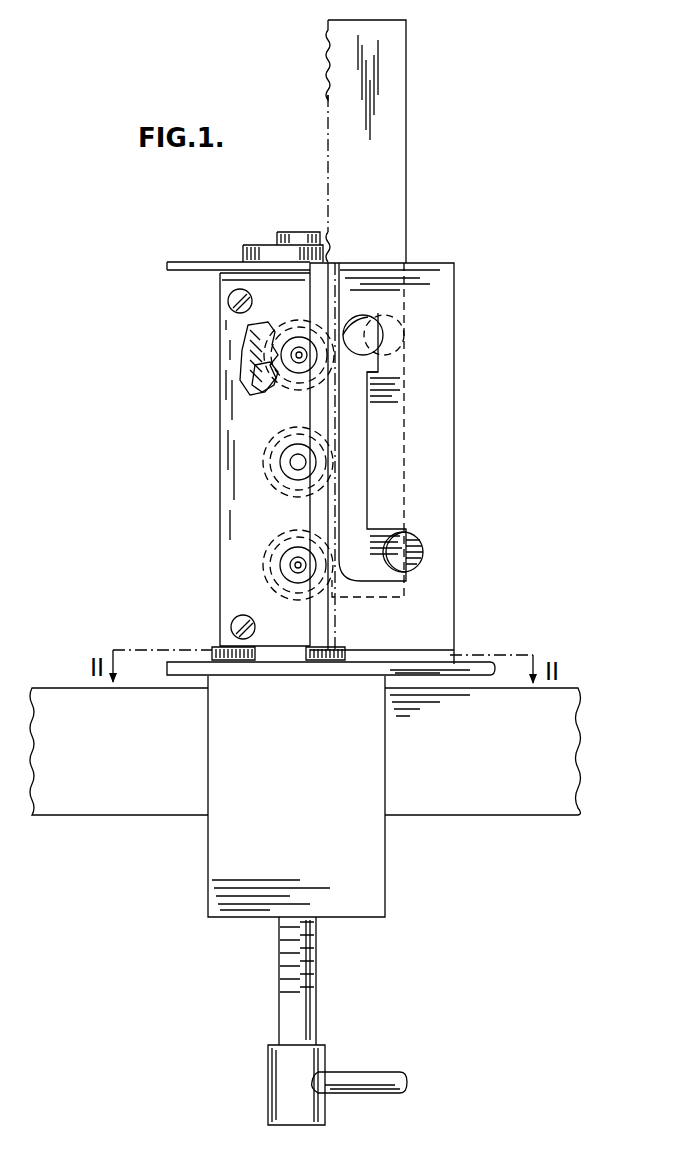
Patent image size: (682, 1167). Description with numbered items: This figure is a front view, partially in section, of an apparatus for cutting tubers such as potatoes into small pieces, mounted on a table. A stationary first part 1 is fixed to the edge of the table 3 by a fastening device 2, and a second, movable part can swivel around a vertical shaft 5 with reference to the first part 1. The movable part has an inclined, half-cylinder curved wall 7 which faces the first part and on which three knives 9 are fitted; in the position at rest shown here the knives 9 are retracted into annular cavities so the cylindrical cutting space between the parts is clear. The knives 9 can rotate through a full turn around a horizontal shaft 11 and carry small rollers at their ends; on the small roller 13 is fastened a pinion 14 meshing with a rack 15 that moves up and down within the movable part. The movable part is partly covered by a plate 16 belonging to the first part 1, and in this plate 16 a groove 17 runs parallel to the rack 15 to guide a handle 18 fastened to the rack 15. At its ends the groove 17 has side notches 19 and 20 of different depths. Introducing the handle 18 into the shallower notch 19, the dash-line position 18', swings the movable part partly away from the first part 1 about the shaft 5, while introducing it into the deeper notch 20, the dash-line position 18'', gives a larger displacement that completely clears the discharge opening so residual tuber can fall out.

The first part 1 is at (212, 263).
The fastening device 2 is at (235, 928).
The table 3 is at (562, 752).
The vertical shaft 5 is at (292, 235).
The curved wall 7 is at (240, 350).
The knives 9 is at (242, 378).
The horizontal shaft 11 is at (308, 358).
The small roller 13 is at (296, 348).
The pinion 14 is at (258, 398).
The rack 15 is at (388, 103).
The plate 16 is at (432, 352).
The groove 17 is at (355, 485).
The handle 18 is at (402, 277).
The handle position in shallower notch 18' is at (441, 304).
The handle position in deeper notch 18'' is at (444, 575).
The shallower notch 19 is at (372, 366).
The deeper notch 20 is at (375, 540).